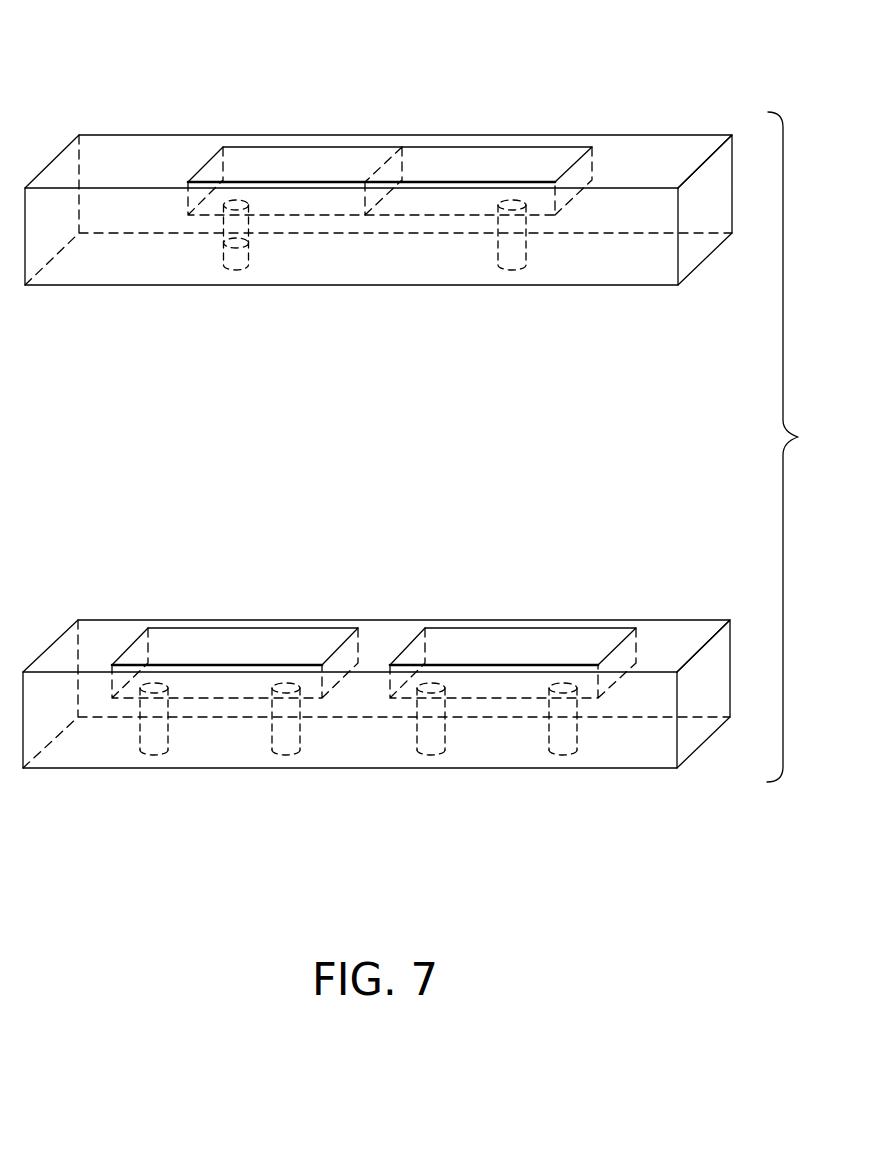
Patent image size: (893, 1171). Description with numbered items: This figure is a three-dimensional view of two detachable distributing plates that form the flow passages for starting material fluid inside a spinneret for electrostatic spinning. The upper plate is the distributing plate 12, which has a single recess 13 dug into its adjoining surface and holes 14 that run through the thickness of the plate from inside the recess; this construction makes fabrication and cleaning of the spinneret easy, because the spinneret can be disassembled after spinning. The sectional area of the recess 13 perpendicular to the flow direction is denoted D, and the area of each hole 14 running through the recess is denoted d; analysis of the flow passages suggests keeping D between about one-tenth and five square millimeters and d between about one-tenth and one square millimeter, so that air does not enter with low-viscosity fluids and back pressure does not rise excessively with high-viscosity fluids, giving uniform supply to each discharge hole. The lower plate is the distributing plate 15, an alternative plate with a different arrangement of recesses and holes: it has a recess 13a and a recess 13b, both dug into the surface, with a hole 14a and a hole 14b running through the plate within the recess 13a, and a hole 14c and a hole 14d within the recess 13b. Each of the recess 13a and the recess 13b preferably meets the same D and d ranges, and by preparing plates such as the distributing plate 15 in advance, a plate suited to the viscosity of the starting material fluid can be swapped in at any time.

The distributing plate 12 is at (116, 112).
The recess 13 is at (495, 163).
The sectional area of the recess D is at (383, 165).
The area of each hole d is at (255, 258).
The holes 14 is at (520, 262).
The distributing plate 15 is at (114, 604).
The recess 13a is at (265, 646).
The recess 13b is at (518, 645).
The hole 14a is at (151, 750).
The hole 14b is at (282, 750).
The hole 14c is at (427, 750).
The hole 14d is at (556, 750).